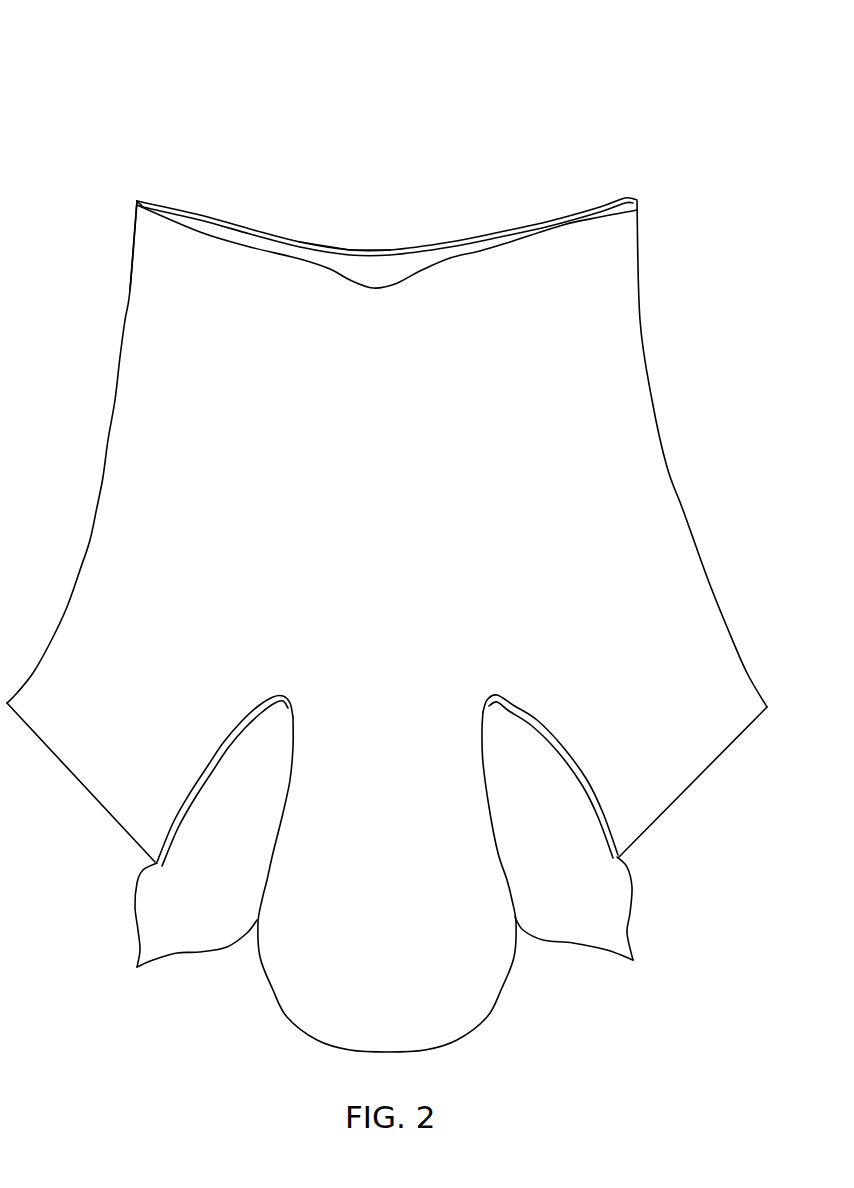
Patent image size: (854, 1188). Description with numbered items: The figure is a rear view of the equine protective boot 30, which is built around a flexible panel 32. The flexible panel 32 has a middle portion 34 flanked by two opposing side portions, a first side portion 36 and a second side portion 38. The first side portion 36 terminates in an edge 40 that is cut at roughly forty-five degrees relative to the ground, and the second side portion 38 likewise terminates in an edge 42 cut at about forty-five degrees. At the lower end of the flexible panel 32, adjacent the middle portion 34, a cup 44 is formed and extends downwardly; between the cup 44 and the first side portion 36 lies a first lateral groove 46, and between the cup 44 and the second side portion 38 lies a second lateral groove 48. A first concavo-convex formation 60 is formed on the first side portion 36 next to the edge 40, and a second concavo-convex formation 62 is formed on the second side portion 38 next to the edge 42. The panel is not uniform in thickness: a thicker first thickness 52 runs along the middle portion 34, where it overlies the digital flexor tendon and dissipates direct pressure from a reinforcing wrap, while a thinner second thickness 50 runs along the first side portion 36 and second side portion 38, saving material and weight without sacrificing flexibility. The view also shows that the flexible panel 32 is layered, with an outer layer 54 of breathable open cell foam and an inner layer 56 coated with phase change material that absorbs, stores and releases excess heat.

The equine protective boot 30 is at (387, 531).
The flexible panel 32 is at (126, 315).
The middle portion 34 is at (395, 385).
The first side portion 36 is at (175, 500).
The second side portion 38 is at (585, 480).
The edge 40 is at (70, 775).
The edge 42 is at (697, 780).
The cup 44 is at (380, 888).
The first lateral groove 46 is at (185, 928).
The second lateral groove 48 is at (586, 921).
The second thickness 50 is at (408, 196).
The first thickness 52 is at (355, 252).
The outer layer 54 is at (141, 199).
The inner layer 56 is at (172, 205).
The first concavo-convex formation 60 is at (156, 680).
The second concavo-convex formation 62 is at (656, 686).